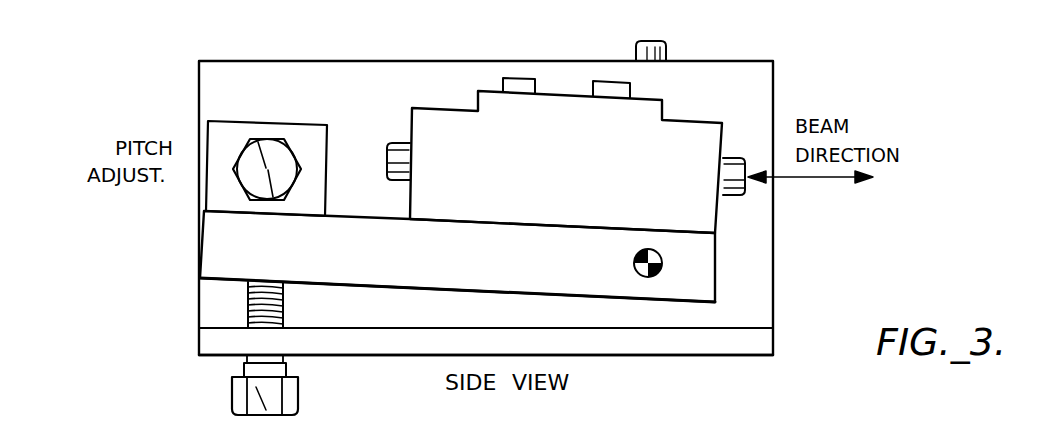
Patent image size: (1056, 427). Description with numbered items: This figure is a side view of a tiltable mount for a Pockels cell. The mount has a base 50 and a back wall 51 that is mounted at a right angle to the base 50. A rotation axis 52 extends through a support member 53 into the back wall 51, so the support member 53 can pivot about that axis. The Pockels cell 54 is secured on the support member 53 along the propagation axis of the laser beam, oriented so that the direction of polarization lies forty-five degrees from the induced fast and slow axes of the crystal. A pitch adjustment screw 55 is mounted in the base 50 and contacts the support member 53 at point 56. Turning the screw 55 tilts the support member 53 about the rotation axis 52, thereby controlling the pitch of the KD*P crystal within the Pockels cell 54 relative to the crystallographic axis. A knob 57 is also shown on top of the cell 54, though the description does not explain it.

The base 50 is at (718, 343).
The back wall 51 is at (468, 60).
The rotation axis 52 is at (663, 267).
The support member 53 is at (223, 235).
The Pockels cell 54 is at (700, 130).
The pitch adjustment screw 55 is at (289, 399).
The contact point 56 is at (242, 286).
The adjustment knob 57 is at (636, 48).